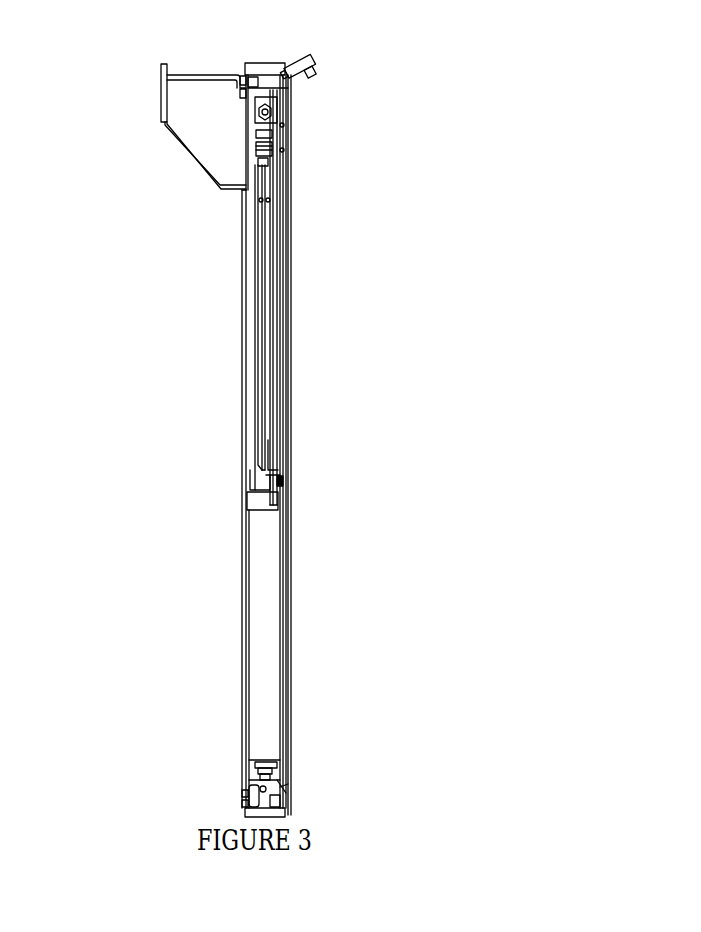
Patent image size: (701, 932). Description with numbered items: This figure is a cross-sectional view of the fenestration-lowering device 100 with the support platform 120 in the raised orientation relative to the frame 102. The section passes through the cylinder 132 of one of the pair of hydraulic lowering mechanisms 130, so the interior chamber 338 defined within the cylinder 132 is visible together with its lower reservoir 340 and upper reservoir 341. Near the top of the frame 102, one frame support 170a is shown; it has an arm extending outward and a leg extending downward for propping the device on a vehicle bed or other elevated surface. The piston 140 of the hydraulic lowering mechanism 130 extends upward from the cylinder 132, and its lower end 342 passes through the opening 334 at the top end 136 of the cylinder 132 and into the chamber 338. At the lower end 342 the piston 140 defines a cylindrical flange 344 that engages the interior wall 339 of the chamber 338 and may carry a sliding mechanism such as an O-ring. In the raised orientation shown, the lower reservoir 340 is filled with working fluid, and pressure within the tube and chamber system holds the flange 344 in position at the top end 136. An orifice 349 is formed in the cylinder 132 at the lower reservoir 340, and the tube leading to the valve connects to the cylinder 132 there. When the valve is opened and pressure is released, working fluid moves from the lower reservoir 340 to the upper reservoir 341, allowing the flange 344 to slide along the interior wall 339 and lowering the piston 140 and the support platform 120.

The fenestration-lowering device 100 is at (442, 188).
The frame 102 is at (292, 233).
The support platform 120 is at (180, 101).
The hydraulic lowering mechanism 130 is at (297, 657).
The cylinder 132 is at (290, 598).
The top end 136 is at (285, 461).
The piston 140 is at (265, 343).
The frame support 170a is at (293, 68).
The opening 334 is at (283, 440).
The interior chamber 338 is at (258, 576).
The interior wall 339 is at (247, 699).
The lower reservoir 340 is at (256, 642).
The upper reservoir 341 is at (280, 481).
The lower end 342 is at (268, 486).
The cylindrical flange 344 is at (258, 502).
The orifice 349 is at (273, 787).